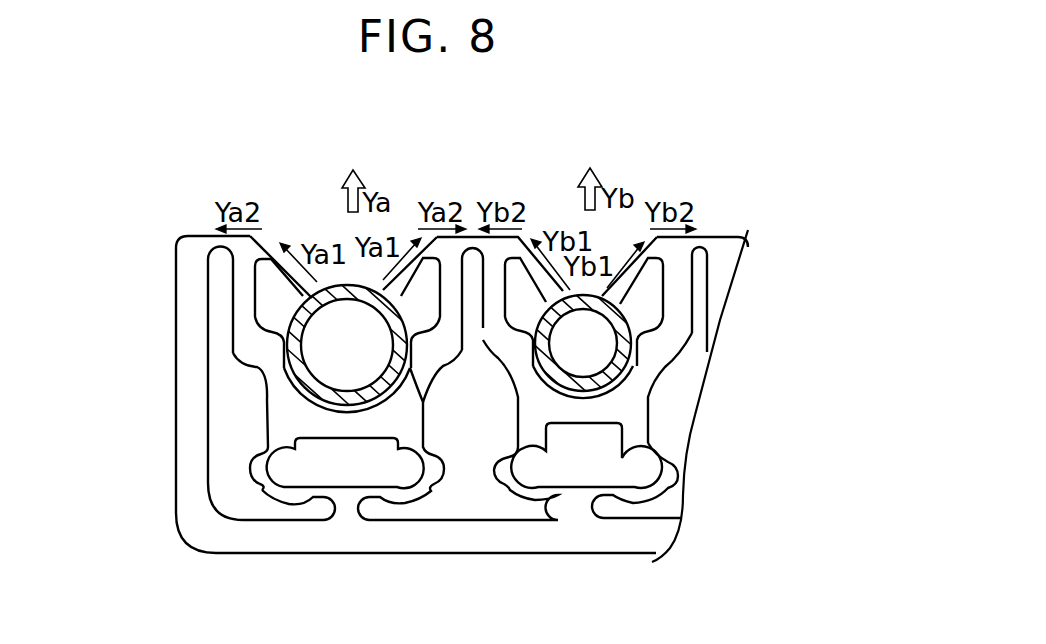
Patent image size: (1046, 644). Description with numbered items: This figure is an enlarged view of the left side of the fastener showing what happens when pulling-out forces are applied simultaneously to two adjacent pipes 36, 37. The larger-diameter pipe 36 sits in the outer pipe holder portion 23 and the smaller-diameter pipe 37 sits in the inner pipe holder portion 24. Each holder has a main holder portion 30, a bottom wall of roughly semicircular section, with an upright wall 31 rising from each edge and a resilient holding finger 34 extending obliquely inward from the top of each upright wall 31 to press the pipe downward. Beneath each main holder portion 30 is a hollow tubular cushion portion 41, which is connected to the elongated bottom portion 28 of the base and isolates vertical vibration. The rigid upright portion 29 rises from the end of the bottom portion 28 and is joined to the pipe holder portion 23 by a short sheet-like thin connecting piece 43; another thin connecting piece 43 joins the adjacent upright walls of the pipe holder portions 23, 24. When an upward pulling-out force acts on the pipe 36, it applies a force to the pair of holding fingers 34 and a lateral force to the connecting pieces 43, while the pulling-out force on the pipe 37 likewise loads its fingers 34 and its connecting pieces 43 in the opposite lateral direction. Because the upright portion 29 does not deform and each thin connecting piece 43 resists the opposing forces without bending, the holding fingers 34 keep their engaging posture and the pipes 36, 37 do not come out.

The pipe holder portion 23 is at (375, 165).
The pipe holder portion 24 is at (613, 165).
The bottom portion 28 is at (257, 538).
The upright portion 29 is at (187, 317).
The main holder portion 30 is at (280, 408).
The upright wall 31 is at (240, 328).
The resilient holding finger 34 is at (295, 275).
The pipe 36 is at (390, 385).
The pipe 37 is at (628, 353).
The hollow tubular cushion portion 41 is at (248, 478).
The thin connecting piece 43 is at (218, 253).